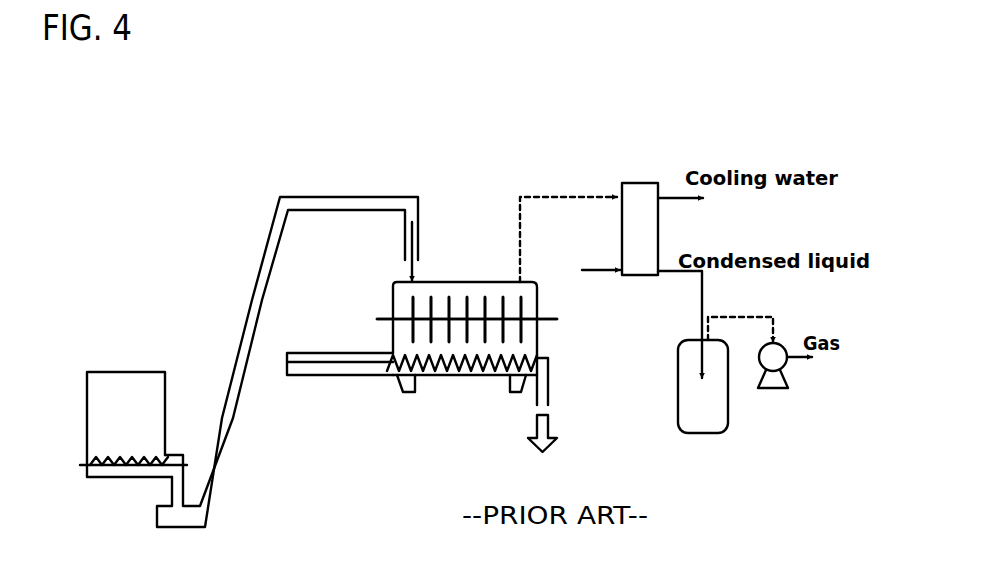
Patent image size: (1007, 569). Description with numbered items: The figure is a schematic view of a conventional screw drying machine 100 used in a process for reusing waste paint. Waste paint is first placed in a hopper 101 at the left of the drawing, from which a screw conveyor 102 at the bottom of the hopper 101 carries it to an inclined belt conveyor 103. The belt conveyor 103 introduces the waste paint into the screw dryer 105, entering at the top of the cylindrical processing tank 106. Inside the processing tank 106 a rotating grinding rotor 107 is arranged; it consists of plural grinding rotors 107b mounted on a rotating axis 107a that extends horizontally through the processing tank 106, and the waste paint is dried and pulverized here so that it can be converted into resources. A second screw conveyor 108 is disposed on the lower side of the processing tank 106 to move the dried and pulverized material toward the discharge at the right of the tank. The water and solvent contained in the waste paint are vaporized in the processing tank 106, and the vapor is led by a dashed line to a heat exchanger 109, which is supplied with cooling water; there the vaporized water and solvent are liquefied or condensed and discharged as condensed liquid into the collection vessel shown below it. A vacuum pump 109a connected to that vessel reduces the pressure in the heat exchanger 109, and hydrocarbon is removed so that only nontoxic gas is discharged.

The screw drying machine 100 is at (450, 136).
The hopper 101 is at (98, 407).
The screw conveyor 102 is at (108, 478).
The belt conveyor 103 is at (230, 436).
The screw dryer 105 is at (487, 248).
The processing tank 106 is at (448, 280).
The rotating grinding rotor 107 is at (528, 292).
The rotating axis 107a is at (410, 306).
The grinding rotors 107b is at (400, 290).
The screw conveyor 108 is at (465, 372).
The heat exchanger 109 is at (640, 177).
The vacuum pump 109a is at (706, 432).